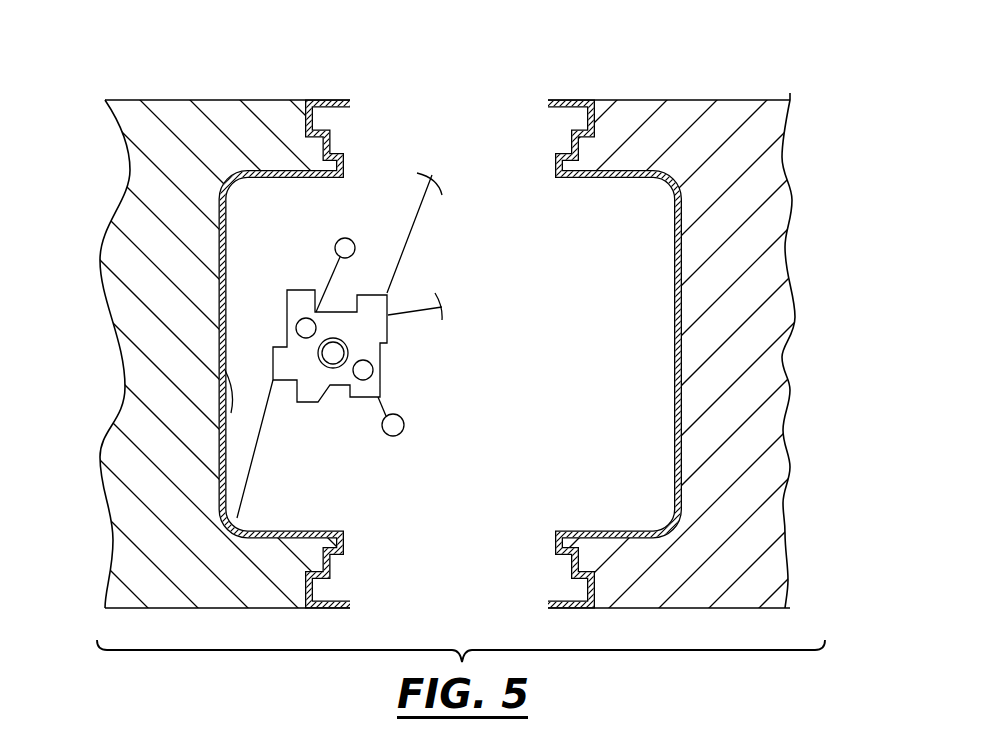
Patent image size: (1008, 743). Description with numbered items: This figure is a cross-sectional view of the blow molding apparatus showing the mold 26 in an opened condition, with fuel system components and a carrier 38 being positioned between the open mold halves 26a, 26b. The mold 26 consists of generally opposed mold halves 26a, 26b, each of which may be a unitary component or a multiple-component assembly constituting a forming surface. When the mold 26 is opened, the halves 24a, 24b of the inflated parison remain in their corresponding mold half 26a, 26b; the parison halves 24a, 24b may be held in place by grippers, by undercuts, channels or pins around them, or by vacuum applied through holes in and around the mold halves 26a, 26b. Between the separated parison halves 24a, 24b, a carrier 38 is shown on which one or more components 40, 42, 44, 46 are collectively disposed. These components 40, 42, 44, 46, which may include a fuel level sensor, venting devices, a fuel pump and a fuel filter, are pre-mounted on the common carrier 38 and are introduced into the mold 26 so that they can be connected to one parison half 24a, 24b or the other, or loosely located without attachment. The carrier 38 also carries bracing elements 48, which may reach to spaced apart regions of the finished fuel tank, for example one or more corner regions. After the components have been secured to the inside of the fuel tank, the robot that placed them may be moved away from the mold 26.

The mold 26 is at (204, 84).
The mold half 26a is at (140, 192).
The mold half 26b is at (772, 140).
The parison half 24a is at (242, 232).
The parison half 24b is at (656, 232).
The carrier 38 is at (375, 295).
The component 40 is at (345, 238).
The component 42 is at (403, 425).
The component 44 is at (363, 370).
The component 46 is at (305, 327).
The bracing elements 48 is at (418, 213).